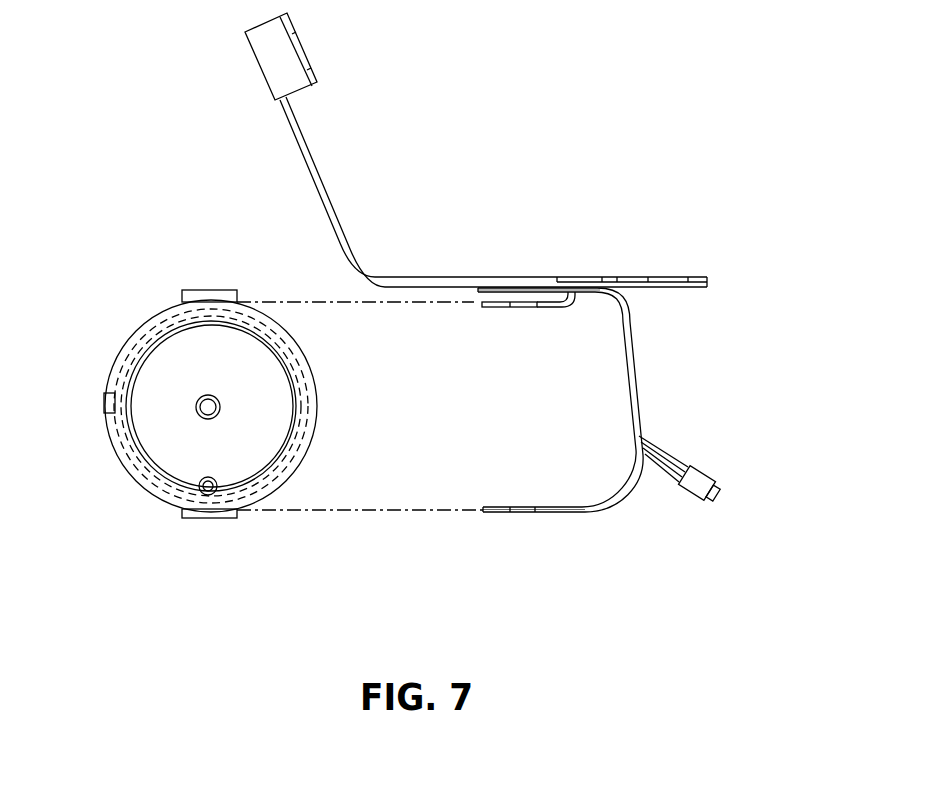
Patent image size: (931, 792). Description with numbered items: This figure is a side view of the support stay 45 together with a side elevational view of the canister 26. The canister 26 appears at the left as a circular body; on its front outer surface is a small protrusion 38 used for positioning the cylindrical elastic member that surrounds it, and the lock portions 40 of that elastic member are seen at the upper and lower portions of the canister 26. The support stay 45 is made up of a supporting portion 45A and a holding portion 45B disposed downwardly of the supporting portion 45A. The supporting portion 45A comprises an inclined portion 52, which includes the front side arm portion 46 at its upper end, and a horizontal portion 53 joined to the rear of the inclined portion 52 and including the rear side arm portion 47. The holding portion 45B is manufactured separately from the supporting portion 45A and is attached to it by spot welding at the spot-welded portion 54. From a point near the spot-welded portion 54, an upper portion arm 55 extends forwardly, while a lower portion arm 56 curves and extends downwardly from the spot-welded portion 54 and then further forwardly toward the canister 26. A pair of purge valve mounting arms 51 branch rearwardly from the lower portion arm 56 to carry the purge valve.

The canister 26 is at (146, 318).
The small protrusion 38 is at (104, 403).
The lock portions 40 is at (204, 290).
The support stay 45 is at (513, 262).
The supporting portion 45A is at (492, 150).
The holding portion 45B is at (609, 400).
The front side arm portion 46 is at (276, 62).
The rear side arm portion 47 is at (636, 277).
The purge valve mounting arms 51 is at (684, 464).
The inclined portion 52 is at (313, 168).
The horizontal portion 53 is at (468, 276).
The spot-welded portion 54 is at (487, 291).
The upper portion arm 55 is at (542, 310).
The lower portion arm 56 is at (548, 506).